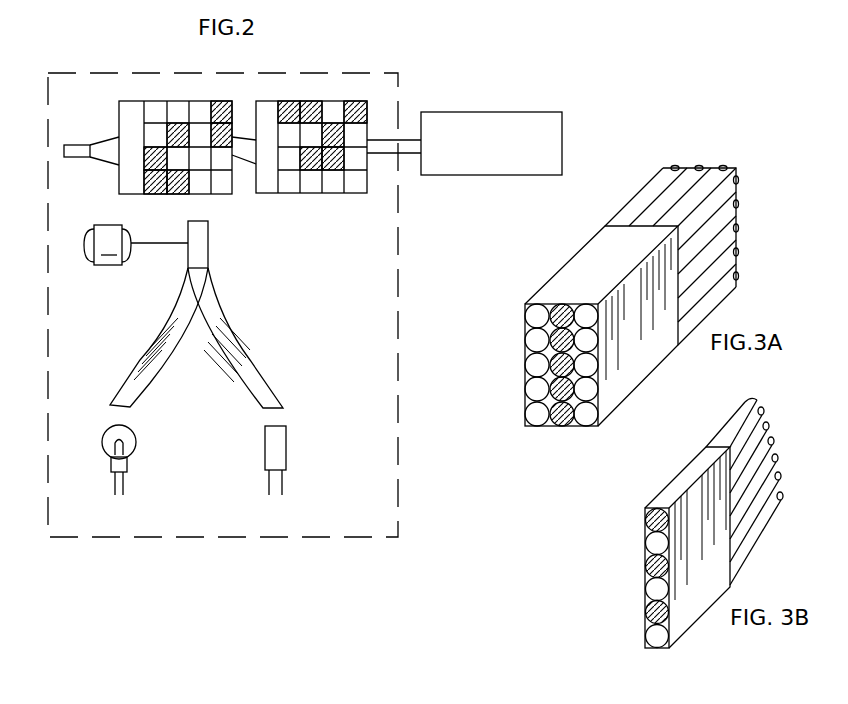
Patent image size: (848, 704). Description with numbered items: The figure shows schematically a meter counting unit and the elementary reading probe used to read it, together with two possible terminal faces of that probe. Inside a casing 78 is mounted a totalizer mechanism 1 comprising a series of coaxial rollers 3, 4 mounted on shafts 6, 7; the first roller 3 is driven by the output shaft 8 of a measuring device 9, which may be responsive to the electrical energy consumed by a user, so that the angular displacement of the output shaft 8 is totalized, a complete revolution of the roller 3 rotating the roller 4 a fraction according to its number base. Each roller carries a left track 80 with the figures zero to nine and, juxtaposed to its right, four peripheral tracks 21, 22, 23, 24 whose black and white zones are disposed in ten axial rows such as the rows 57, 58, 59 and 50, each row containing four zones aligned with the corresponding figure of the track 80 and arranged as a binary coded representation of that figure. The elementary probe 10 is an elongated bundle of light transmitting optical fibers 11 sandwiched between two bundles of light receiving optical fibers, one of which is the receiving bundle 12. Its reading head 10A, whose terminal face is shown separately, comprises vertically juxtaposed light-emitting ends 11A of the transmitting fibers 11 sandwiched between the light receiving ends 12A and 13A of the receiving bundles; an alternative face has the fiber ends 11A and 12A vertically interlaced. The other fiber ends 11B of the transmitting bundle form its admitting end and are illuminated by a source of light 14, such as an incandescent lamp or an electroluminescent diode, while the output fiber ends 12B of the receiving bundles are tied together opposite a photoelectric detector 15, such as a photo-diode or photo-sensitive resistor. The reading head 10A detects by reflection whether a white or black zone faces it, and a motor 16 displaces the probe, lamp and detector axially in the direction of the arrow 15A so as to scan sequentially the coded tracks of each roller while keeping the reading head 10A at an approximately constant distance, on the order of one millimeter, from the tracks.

In FIG. 2, the totalizer mechanism 1 is at (106, 178).
In FIG. 2, the first roller 3 is at (339, 138).
In FIG. 2, the roller 4 is at (173, 101).
In FIG. 2, the shaft 6 is at (252, 134).
In FIG. 2, the shaft 7 is at (110, 140).
In FIG. 2, the output shaft 8 is at (394, 138).
In FIG. 2, the measuring device 9 is at (476, 112).
In FIG. 2, the elementary probe 10 is at (229, 239).
In FIG. 3A, the elementary probe 10 is at (608, 316).
In FIG. 3B, the elementary probe 10 is at (680, 532).
In FIG. 2, the reading head 10A is at (197, 218).
In FIG. 3A, the reading head 10A is at (578, 346).
In FIG. 2, the light transmitting optical fibers 11 is at (152, 338).
In FIG. 3A, the light-emitting ends 11A is at (556, 304).
In FIG. 3B, the light-emitting ends 11A is at (652, 518).
In FIG. 2, the admitting end fiber ends 11B is at (120, 410).
In FIG. 2, the light receiving optical fibers 12 is at (250, 350).
In FIG. 3A, the light receiving ends 12A is at (537, 413).
In FIG. 3B, the light receiving ends 12A is at (655, 637).
In FIG. 2, the output fiber ends 12B is at (265, 413).
In FIG. 3A, the light receiving ends 13A is at (582, 416).
In FIG. 2, the source of light 14 is at (128, 443).
In FIG. 2, the photoelectric detector 15 is at (273, 445).
In FIG. 2, the arrow indicating axial displacement 15A is at (180, 233).
In FIG. 2, the motor 16 is at (104, 266).
In FIG. 2, the peripheral track 21 is at (287, 101).
In FIG. 2, the peripheral track 22 is at (311, 101).
In FIG. 2, the peripheral track 23 is at (333, 101).
In FIG. 2, the peripheral track 24 is at (355, 101).
In FIG. 2, the axial row 50 is at (352, 185).
In FIG. 2, the axial row 57 is at (370, 112).
In FIG. 2, the axial row 58 is at (355, 135).
In FIG. 2, the axial row 59 is at (350, 165).
In FIG. 2, the casing 78 is at (47, 262).
In FIG. 2, the left track 80 is at (131, 101).